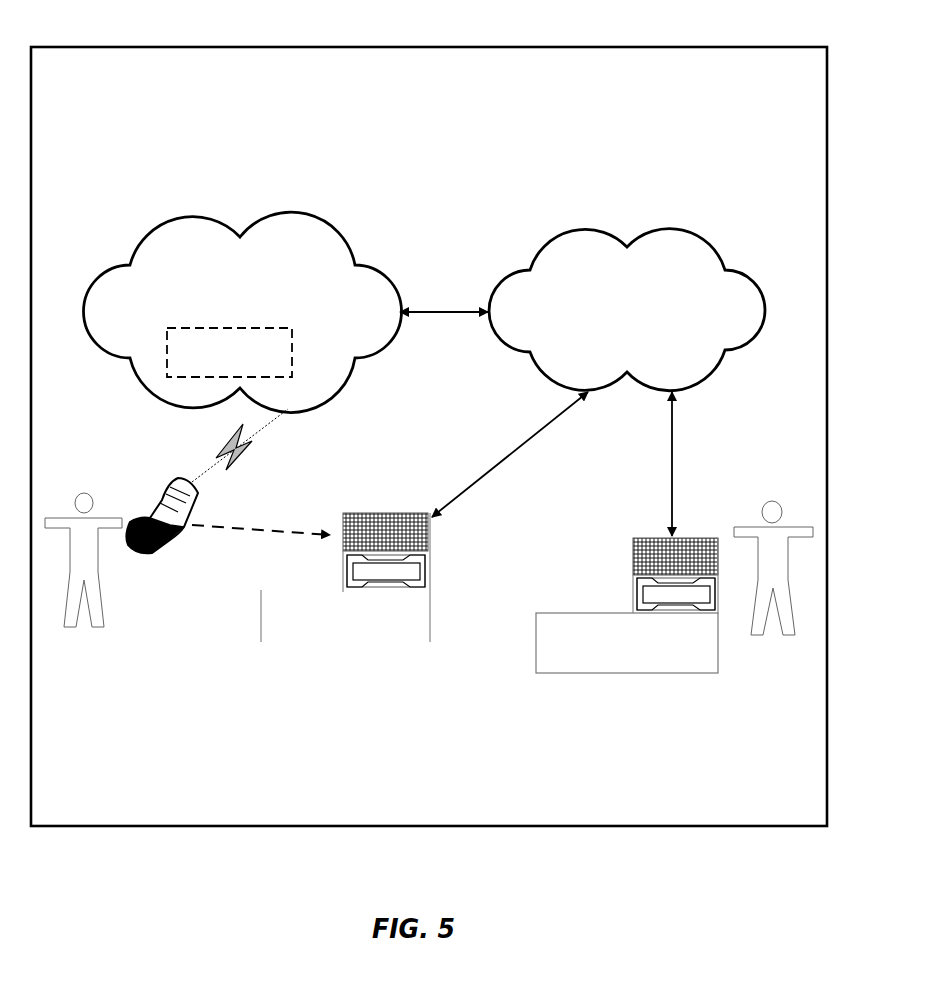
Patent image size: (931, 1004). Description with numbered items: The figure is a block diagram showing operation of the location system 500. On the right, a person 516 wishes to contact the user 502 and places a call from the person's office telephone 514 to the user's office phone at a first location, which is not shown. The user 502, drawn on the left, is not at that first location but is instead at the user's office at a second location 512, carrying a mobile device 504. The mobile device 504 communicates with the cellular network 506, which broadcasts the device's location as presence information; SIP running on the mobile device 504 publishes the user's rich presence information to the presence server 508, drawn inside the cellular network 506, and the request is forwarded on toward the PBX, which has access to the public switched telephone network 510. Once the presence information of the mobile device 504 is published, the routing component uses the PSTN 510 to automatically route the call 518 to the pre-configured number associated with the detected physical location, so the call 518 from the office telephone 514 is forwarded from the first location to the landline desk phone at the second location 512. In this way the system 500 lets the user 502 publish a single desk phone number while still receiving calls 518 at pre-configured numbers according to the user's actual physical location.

The location system 500 is at (644, 28).
The user 502 is at (86, 490).
The mobile device 504 is at (150, 553).
The cellular network 506 is at (288, 218).
The presence server 508 is at (167, 357).
The public switched telephone network (PSTN) 510 is at (587, 230).
The second location 512 is at (430, 565).
The office telephone 514 is at (643, 537).
The person 516 is at (765, 498).
The call 518 is at (300, 534).